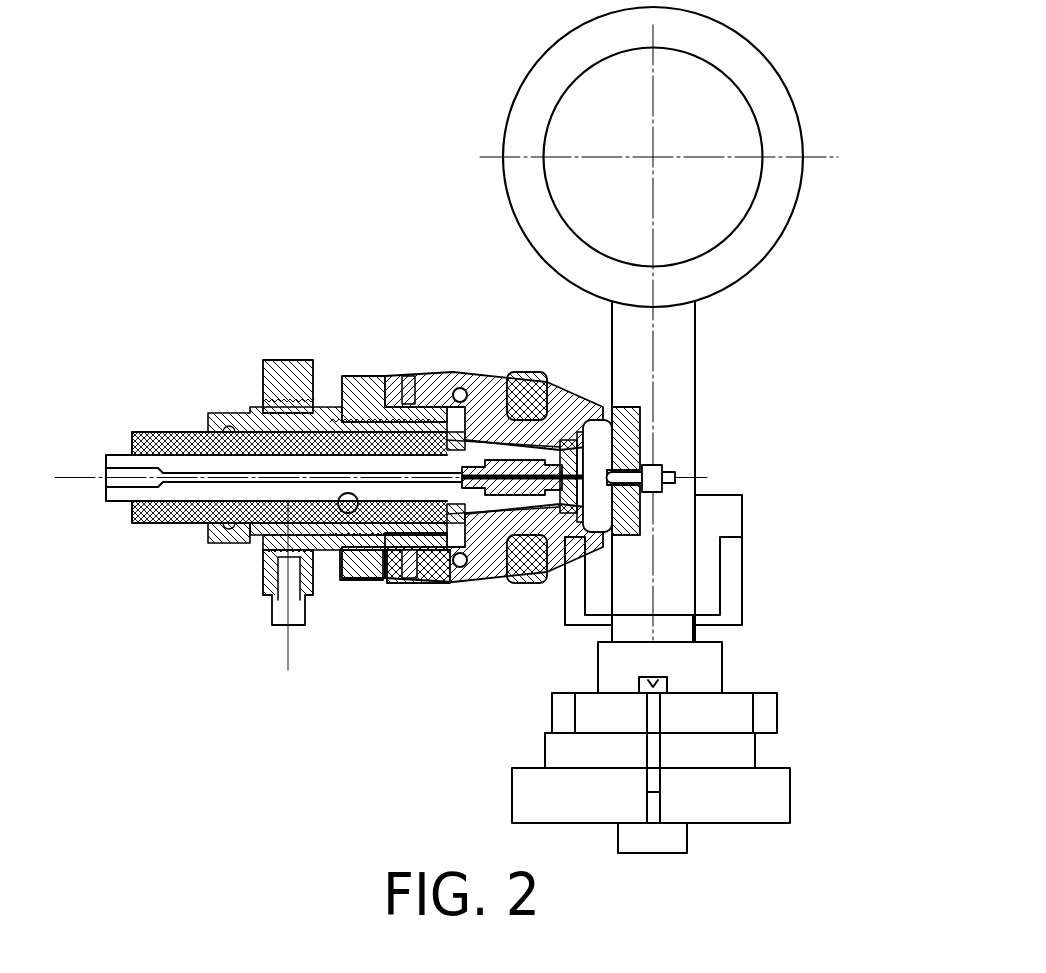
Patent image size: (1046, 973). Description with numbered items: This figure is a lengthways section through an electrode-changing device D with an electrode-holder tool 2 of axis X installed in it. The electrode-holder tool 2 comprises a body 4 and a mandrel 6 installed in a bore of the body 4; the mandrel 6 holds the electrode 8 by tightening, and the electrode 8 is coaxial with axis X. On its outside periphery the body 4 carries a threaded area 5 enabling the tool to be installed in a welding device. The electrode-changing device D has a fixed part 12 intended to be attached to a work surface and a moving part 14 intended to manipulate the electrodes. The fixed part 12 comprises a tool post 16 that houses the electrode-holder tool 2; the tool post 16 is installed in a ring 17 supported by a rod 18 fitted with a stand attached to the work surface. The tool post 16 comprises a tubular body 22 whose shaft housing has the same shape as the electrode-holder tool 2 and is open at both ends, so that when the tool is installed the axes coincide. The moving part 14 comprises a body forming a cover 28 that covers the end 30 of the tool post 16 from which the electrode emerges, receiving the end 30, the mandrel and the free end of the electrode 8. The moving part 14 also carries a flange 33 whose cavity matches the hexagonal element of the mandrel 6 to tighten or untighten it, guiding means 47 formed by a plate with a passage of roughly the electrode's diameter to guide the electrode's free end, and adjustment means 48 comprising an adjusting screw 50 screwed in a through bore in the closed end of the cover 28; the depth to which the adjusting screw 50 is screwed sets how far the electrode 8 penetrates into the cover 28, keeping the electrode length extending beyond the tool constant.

The electrode-holder tool 2 is at (217, 400).
The body 4 is at (208, 543).
The threaded area 5 is at (408, 530).
The mandrel 6 is at (500, 505).
The electrode 8 is at (603, 505).
The fixed part 12 is at (328, 392).
The moving part 14 is at (476, 368).
The tool post 16 is at (327, 553).
The ring 17 is at (280, 378).
The rod 18 is at (278, 603).
The tubular body 22 is at (350, 513).
The cover 28 is at (525, 388).
The end of tool post 30 is at (484, 440).
The flange 33 is at (543, 520).
The guiding means 47 is at (570, 437).
The adjustment means 48 is at (670, 457).
The adjusting screw 50 is at (652, 482).
The electrode-changing device D is at (364, 330).
The axis X is at (72, 470).